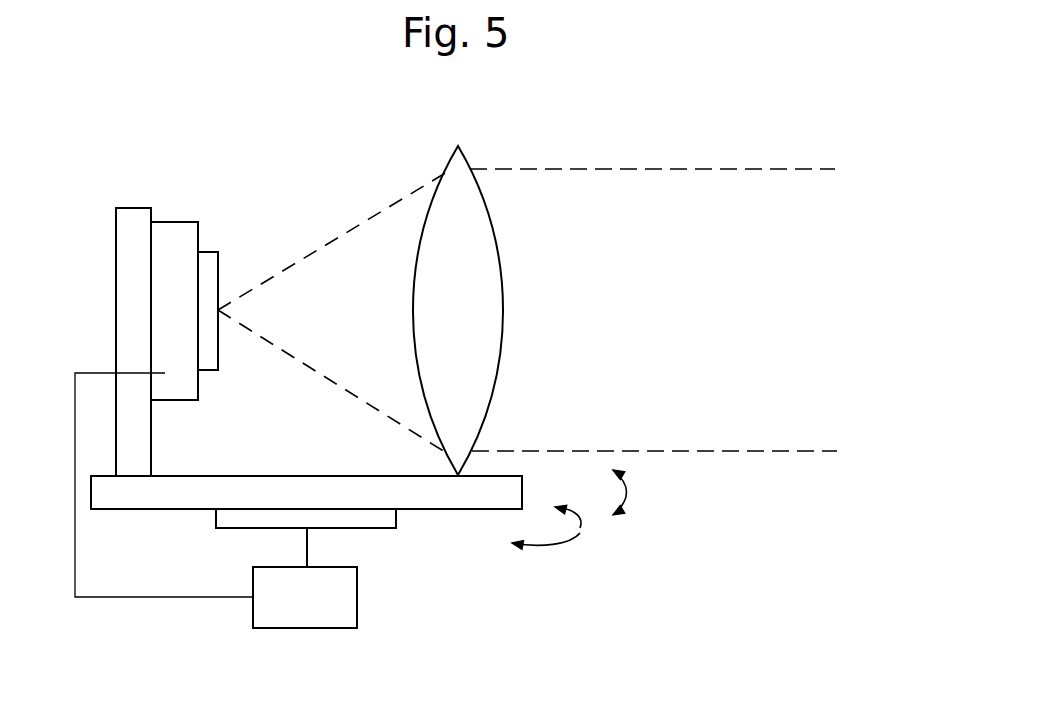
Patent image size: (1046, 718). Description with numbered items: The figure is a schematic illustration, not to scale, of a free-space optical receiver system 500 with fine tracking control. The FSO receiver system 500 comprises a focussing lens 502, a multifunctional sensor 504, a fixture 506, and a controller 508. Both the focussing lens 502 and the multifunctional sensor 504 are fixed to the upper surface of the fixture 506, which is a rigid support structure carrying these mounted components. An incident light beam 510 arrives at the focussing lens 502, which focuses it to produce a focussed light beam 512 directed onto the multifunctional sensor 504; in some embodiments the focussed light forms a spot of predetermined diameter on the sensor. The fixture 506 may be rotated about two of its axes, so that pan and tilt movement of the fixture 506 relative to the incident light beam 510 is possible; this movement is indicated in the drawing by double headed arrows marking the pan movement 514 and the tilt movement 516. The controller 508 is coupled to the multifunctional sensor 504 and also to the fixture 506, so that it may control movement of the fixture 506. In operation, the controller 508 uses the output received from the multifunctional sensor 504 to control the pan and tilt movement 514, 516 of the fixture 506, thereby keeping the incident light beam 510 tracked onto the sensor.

The FSO receiver system 500 is at (277, 183).
The focussing lens 502 is at (460, 172).
The multifunctional sensor 504 is at (175, 232).
The fixture 506 is at (452, 492).
The controller 508 is at (285, 616).
The incident light beam 510 is at (701, 215).
The focussed light beam 512 is at (353, 263).
The pan movement 514 is at (580, 530).
The tilt movement 516 is at (625, 492).